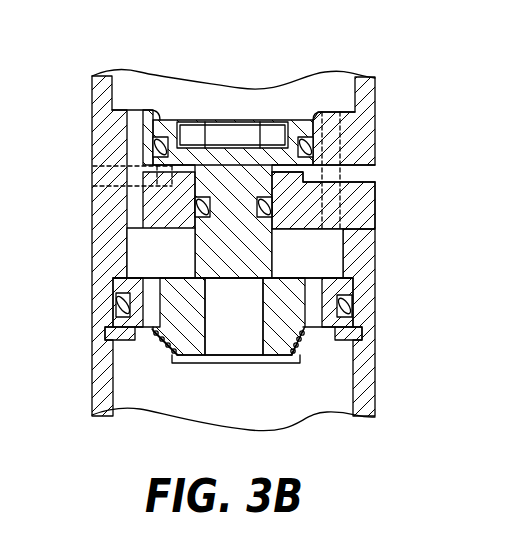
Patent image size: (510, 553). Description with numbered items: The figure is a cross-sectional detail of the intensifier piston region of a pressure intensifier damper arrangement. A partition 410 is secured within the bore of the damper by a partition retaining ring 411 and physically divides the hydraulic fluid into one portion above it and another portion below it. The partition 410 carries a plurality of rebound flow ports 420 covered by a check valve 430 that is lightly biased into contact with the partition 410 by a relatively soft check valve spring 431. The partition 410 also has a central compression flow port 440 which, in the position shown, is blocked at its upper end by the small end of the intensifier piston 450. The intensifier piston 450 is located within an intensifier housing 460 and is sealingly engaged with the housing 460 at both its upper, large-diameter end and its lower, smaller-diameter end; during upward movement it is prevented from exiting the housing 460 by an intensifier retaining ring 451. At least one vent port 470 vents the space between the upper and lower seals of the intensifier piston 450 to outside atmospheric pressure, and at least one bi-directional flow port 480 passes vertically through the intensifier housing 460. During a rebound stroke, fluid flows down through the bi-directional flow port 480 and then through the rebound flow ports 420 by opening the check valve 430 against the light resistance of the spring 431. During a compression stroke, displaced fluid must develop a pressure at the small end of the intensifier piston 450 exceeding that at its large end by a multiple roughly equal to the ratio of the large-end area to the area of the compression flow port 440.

The partition 410 is at (127, 257).
The housing flange 411 is at (355, 353).
The piston 420 is at (318, 318).
The fastener 430 is at (323, 320).
The check valve spring 431 is at (298, 352).
The compression flow port 440 is at (240, 318).
The intensifier piston 450 is at (235, 173).
The seal 451 is at (127, 240).
The retaining ring 460 is at (310, 208).
The slot 470 is at (357, 175).
The bi-directional flow port 480 is at (137, 115).